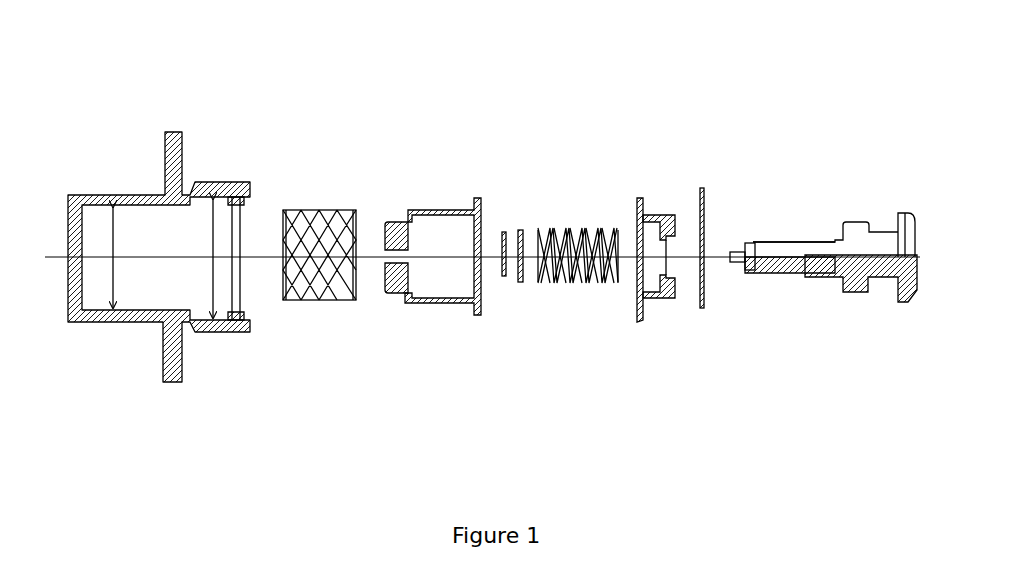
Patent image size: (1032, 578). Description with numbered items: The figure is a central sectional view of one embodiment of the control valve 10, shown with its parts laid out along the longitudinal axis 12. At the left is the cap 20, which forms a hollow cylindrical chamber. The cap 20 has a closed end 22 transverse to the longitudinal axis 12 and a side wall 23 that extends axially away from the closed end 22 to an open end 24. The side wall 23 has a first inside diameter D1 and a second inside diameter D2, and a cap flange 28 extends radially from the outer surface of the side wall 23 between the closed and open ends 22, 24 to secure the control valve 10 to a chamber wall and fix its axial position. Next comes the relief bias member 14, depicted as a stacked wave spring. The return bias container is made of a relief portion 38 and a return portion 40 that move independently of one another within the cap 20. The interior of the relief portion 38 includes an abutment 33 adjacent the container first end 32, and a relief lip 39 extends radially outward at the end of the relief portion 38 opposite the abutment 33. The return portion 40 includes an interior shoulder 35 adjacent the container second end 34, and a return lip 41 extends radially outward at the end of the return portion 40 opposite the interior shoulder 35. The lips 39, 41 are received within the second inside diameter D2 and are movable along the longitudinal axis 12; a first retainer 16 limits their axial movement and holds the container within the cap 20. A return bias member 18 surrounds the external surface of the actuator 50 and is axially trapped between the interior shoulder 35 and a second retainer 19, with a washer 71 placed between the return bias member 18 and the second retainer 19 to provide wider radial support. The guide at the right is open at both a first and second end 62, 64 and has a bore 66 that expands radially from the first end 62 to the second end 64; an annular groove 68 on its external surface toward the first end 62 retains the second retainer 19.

The control valve 10 is at (450, 126).
The longitudinal axis 12 is at (50, 257).
The relief bias member 14 is at (320, 210).
The first retainer 16 is at (703, 188).
The return bias member 18 is at (570, 228).
The second retainer 19 is at (503, 232).
The cap 20 is at (130, 195).
The closed end 22 is at (76, 195).
The side wall 23 is at (100, 195).
The open end 24 is at (250, 182).
The cap flange 28 is at (173, 383).
The container first end 32 is at (395, 222).
The abutment 33 is at (410, 275).
The container second end 34 is at (670, 215).
The interior shoulder 35 is at (662, 298).
The relief portion 38 is at (440, 210).
The relief lip 39 is at (478, 315).
The return portion 40 is at (647, 215).
The return lip 41 is at (640, 305).
The actuator 50 is at (815, 240).
The first end 62 is at (745, 268).
The second end 64 is at (852, 290).
The bore 66 is at (793, 268).
The annular groove 68 is at (752, 248).
The washer 71 is at (521, 230).
The first inside diameter D1 is at (115, 306).
The second inside diameter D2 is at (215, 315).